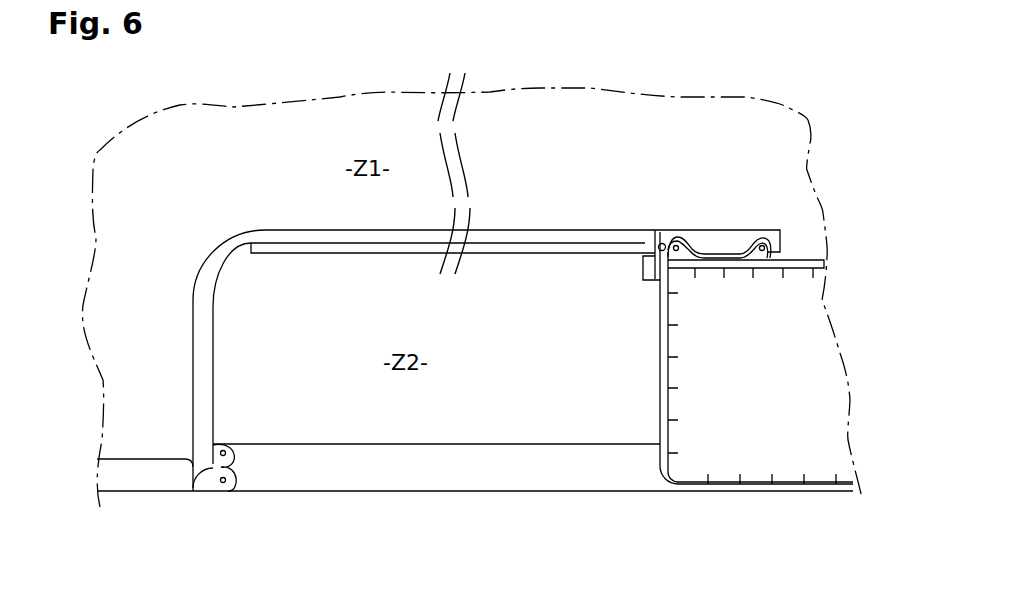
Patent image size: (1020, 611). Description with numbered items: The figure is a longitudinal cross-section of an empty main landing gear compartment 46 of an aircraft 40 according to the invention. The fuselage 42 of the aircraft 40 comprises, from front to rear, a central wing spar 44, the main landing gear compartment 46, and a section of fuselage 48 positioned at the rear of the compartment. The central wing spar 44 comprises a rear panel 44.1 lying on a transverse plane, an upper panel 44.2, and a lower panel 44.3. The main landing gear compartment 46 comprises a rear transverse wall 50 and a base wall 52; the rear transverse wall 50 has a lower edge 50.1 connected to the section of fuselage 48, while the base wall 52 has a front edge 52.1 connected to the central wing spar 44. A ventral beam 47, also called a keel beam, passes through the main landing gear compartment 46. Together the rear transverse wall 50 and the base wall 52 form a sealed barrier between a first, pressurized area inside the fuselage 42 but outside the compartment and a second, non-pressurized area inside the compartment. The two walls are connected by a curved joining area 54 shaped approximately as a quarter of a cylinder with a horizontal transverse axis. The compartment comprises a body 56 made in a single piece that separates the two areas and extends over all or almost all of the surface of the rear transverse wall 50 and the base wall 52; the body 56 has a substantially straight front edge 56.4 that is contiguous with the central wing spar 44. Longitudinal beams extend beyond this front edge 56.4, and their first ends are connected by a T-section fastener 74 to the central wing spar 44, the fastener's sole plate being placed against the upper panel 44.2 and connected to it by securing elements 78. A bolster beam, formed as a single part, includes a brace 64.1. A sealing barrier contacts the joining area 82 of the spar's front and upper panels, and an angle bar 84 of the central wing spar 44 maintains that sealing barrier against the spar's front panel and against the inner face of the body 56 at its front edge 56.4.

The aircraft 40 is at (742, 541).
The fuselage 42 is at (137, 170).
The central wing spar 44 is at (783, 456).
The rear panel 44.1 is at (668, 403).
The upper panel 44.2 is at (767, 270).
The lower panel 44.3 is at (820, 484).
The main landing gear compartment 46 is at (436, 450).
The ventral beam 47 is at (529, 493).
The section of fuselage 48 is at (161, 502).
The rear transverse wall 50 is at (226, 369).
The lower edge 50.1 is at (233, 461).
The base wall 52 is at (526, 262).
The front edge 52.1 is at (660, 240).
The curved joining area 54 is at (251, 285).
The body 56 is at (378, 262).
The front edge 56.4 is at (665, 236).
The brace 64.1 is at (213, 486).
The fastener 74 is at (726, 242).
The securing elements 78 is at (645, 235).
The joining area 82 is at (654, 279).
The angle bar 84 is at (643, 272).